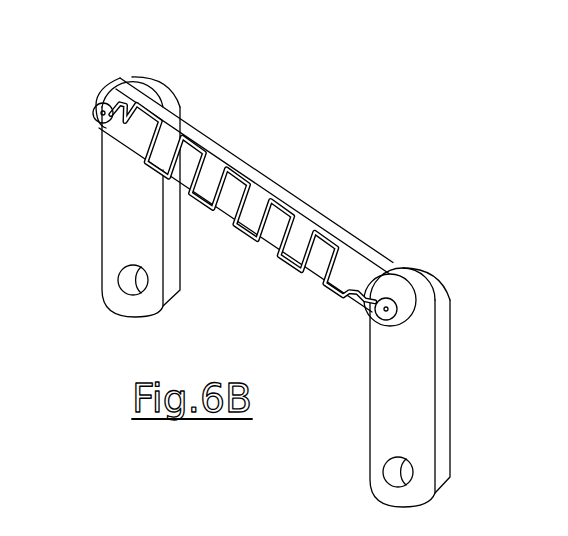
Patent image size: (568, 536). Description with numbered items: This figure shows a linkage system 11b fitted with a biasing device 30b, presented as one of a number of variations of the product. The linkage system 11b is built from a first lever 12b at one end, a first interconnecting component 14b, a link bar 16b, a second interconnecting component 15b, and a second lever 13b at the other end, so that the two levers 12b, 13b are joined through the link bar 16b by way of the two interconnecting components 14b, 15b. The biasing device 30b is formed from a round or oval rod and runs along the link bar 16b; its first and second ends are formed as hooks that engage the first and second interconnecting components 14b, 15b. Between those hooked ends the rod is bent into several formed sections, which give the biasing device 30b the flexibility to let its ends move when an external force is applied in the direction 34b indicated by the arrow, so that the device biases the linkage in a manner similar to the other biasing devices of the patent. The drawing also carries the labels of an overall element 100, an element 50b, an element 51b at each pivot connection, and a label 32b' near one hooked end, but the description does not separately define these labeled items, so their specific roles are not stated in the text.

The adjustable support assembly 100 is at (452, 141).
The linkage system 11b is at (260, 152).
The first lever 12b is at (103, 246).
The second lever 13b is at (370, 398).
The first interconnecting component 14b is at (98, 111).
The second interconnecting component 15b is at (374, 300).
The link bar 16b is at (278, 188).
The biasing device 30b is at (243, 241).
The direction 34b is at (338, 238).
The mounting member 50b is at (0, 340).
The pivot pin 51b is at (108, 103).
The connecting portion 32b' is at (30, 405).